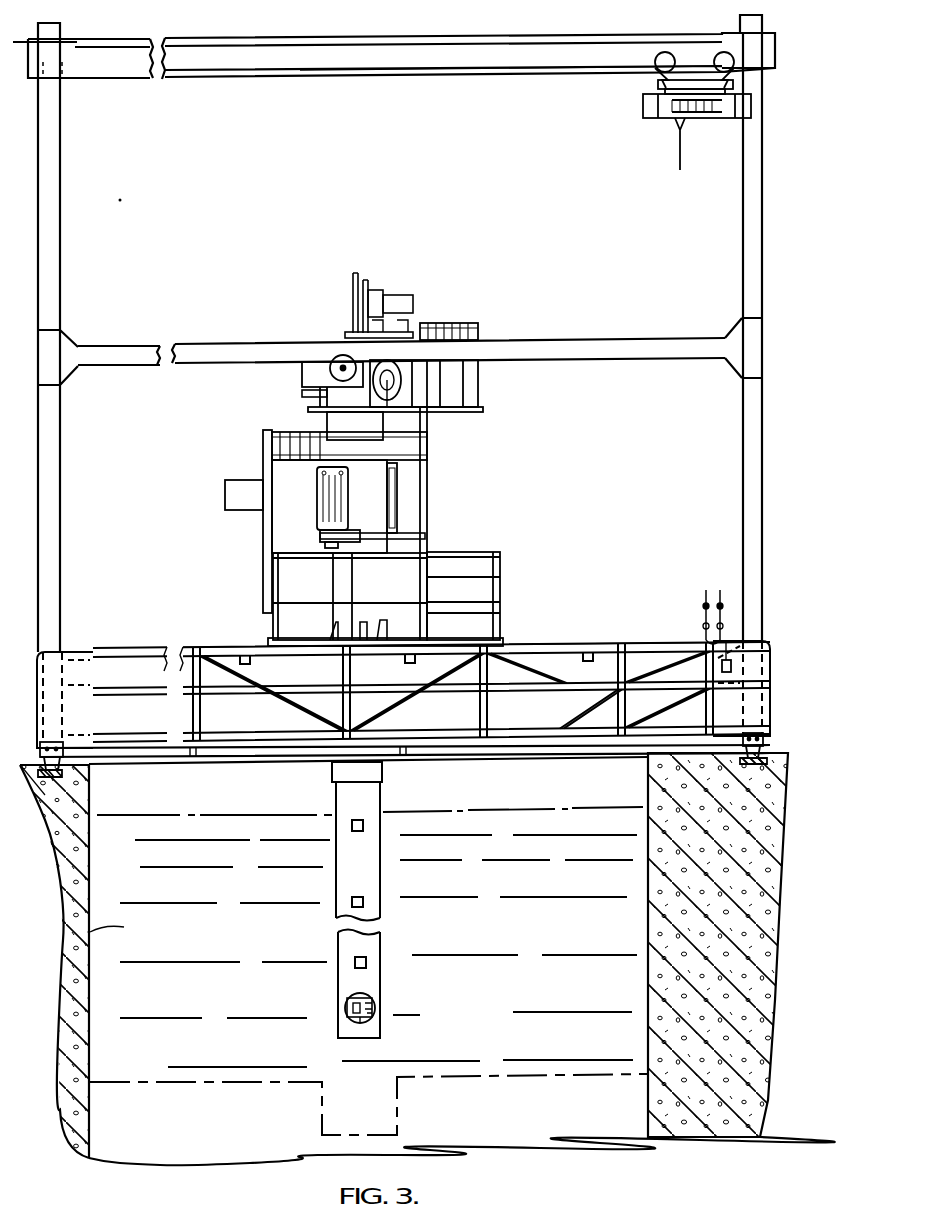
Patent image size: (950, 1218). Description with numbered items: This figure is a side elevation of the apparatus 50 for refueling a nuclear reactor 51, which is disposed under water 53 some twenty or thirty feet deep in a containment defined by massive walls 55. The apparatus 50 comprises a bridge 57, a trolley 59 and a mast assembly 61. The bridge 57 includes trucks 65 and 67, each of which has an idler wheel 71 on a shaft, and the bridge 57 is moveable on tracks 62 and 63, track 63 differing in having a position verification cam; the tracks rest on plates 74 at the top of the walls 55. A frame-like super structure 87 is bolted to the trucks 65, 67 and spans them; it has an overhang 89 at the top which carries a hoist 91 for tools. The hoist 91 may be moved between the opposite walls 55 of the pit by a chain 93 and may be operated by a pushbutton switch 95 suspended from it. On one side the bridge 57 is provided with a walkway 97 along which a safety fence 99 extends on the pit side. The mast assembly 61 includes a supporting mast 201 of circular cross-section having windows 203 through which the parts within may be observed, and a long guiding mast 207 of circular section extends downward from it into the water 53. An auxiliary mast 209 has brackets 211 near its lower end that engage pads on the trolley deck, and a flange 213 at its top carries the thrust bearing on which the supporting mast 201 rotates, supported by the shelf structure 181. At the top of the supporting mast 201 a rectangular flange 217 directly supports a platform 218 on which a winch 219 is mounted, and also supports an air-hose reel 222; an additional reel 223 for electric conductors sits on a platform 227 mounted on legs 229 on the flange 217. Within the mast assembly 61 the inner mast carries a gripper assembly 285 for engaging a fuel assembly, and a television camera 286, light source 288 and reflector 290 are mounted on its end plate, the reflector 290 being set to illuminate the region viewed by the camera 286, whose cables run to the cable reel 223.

The overhang 89 is at (622, 46).
The super structure 87 is at (514, 74).
The hoist 91 is at (667, 120).
The additional reel for electric conductors 223 is at (364, 298).
The platform 227 is at (350, 332).
The winch 219 is at (318, 366).
The platform 218 is at (302, 393).
The legs 229 is at (417, 378).
The rectangular flange 217 is at (308, 408).
The air-hose reel 222 is at (402, 398).
The windows 203 is at (337, 500).
The supporting mast 201 is at (387, 498).
The apparatus for refueling a nuclear reactor 50 is at (492, 517).
The flange 213 is at (410, 537).
The shelf unit 181 is at (497, 552).
The auxiliary mast 209 is at (400, 583).
The brackets 211 is at (334, 620).
The trolley 59 is at (265, 648).
The safety fence 99 is at (620, 648).
The chain 93 is at (706, 610).
The pushbutton switch 95 is at (722, 667).
The bridge 57 is at (766, 641).
The walkway 97 is at (252, 742).
The truck 65 is at (742, 745).
The truck 67 is at (64, 759).
The idler wheel 71 is at (40, 764).
The rail plate 74 is at (68, 780).
The track 63 is at (48, 772).
The track 62 is at (746, 768).
The mast assembly 61 is at (387, 763).
The walls 55 is at (72, 860).
The water 53 is at (75, 923).
The guiding mast 207 is at (380, 890).
The gripper assembly 285 is at (440, 989).
The light source 288 is at (377, 1004).
The television camera 286 is at (350, 1012).
The reflector 290 is at (368, 1020).
The nuclear reactor 51 is at (396, 1090).